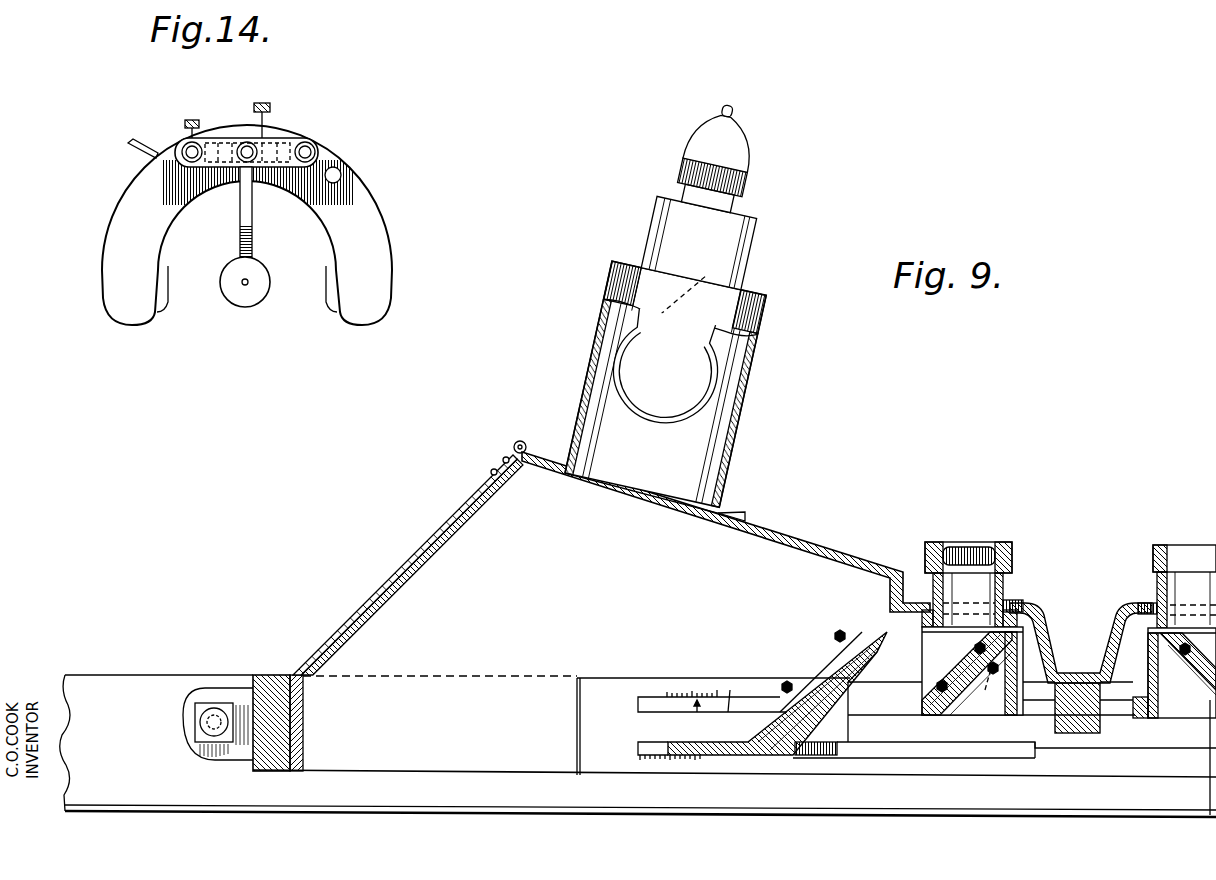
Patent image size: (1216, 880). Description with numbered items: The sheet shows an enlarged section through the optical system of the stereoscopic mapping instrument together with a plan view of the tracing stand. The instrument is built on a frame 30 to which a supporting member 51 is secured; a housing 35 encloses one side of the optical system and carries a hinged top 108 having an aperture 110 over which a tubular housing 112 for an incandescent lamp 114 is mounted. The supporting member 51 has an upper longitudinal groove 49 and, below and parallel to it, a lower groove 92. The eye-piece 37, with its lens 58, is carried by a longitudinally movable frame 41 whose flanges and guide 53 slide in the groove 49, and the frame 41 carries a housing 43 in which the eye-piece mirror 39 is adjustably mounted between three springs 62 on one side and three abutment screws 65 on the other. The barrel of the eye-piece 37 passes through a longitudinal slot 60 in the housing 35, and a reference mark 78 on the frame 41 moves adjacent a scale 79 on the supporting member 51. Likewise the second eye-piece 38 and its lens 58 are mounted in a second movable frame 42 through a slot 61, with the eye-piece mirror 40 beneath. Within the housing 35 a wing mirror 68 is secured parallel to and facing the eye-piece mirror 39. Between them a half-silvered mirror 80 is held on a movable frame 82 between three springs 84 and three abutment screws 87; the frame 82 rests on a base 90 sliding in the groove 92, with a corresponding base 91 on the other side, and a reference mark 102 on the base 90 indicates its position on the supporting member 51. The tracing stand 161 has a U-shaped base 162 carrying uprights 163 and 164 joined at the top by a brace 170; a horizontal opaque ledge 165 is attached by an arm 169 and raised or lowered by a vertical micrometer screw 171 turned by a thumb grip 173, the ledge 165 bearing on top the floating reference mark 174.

In FIG. 9, the frame 30 is at (145, 680).
In FIG. 9, the supporting member 51 is at (277, 762).
In FIG. 9, the housing 35 is at (378, 590).
In FIG. 9, the wing mirror 68 is at (466, 533).
In FIG. 9, the hinged top 108 is at (812, 547).
In FIG. 9, the aperture 110 is at (642, 499).
In FIG. 9, the tubular housing 112 is at (745, 442).
In FIG. 9, the incandescent lamp 114 is at (665, 368).
In FIG. 9, the reference mark 102 is at (637, 765).
In FIG. 9, the longitudinal groove 49 is at (640, 703).
In FIG. 9, the scale 79 is at (668, 695).
In FIG. 9, the guide 53 is at (729, 690).
In FIG. 9, the reference mark 78 is at (697, 712).
In FIG. 9, the groove 92 is at (640, 747).
In FIG. 9, the half-silvered mirror 80 is at (828, 672).
In FIG. 9, the movable frame 82 is at (853, 632).
In FIG. 9, the spring 84 is at (875, 660).
In FIG. 9, the abutment screw 87 is at (786, 681).
In FIG. 9, the base 90 is at (816, 760).
In FIG. 9, the longitudinally movable frame 41 is at (890, 702).
In FIG. 9, the eye-piece 37 is at (962, 545).
In FIG. 9, the lens 58 is at (972, 565).
In FIG. 9, the longitudinal slot 60 is at (1015, 600).
In FIG. 9, the housing 43 is at (1040, 625).
In FIG. 9, the spring 62 is at (968, 705).
In FIG. 9, the abutment screw 65 is at (975, 648).
In FIG. 9, the eye-piece mirror 39 is at (946, 682).
In FIG. 9, the eye-piece 38 is at (1185, 545).
In FIG. 9, the longitudinal slot 61 is at (1146, 603).
In FIG. 9, the longitudinally movable frame 42 is at (1160, 712).
In FIG. 9, the eye-piece mirror 40 is at (1185, 688).
In FIG. 9, the base 91 is at (1180, 765).
In FIG. 14, the tracing stand 161 is at (395, 254).
In FIG. 14, the U-shaped base 162 is at (112, 253).
In FIG. 14, the upright 163 is at (187, 147).
In FIG. 14, the upright 164 is at (308, 153).
In FIG. 14, the ledge 165 is at (228, 293).
In FIG. 14, the arm 169 is at (251, 232).
In FIG. 14, the brace 170 is at (287, 147).
In FIG. 14, the vertical micrometer screw 171 is at (242, 147).
In FIG. 14, the thumb grip 173 is at (235, 177).
In FIG. 14, the reference mark 174 is at (248, 285).